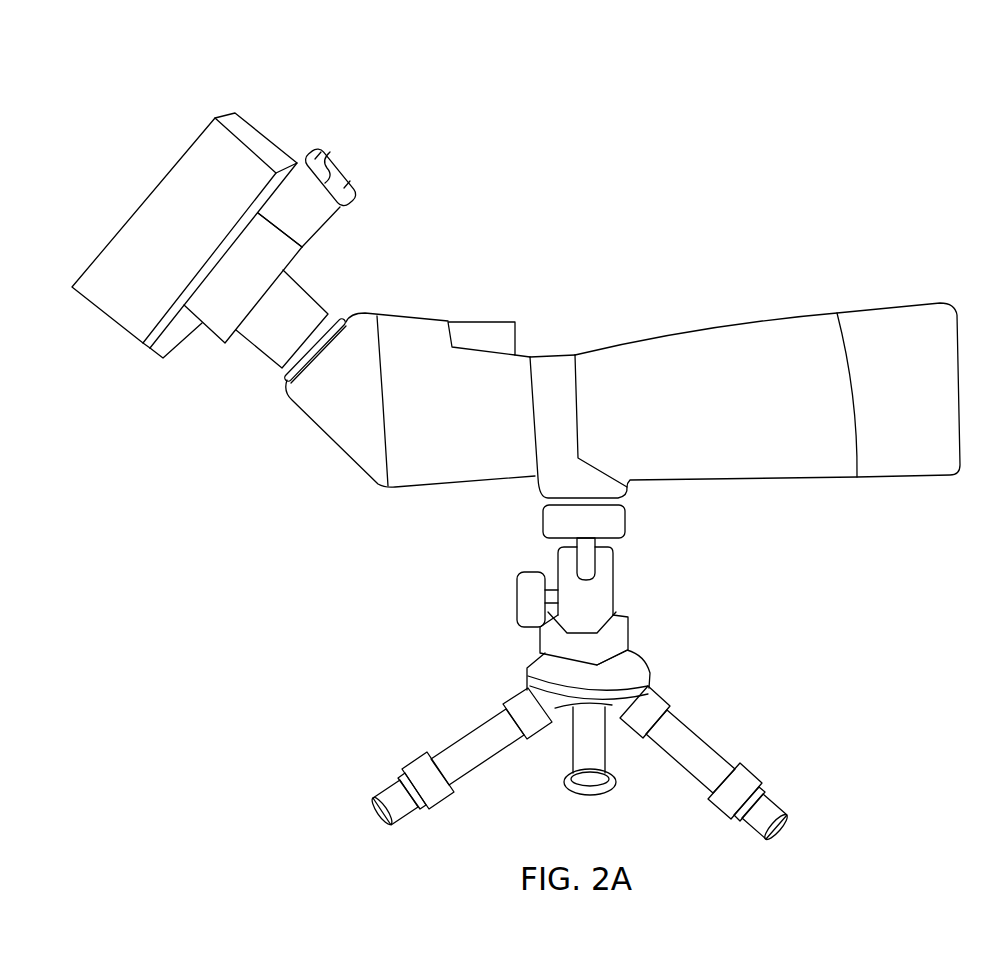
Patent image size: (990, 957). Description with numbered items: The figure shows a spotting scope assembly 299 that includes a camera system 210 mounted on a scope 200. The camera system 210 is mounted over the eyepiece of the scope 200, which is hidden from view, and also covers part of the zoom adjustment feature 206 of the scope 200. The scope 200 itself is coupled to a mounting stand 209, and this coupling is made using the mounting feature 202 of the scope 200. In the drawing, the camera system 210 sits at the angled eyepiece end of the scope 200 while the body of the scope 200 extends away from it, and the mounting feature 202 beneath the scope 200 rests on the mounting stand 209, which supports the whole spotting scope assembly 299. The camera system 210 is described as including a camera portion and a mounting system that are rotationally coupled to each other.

The spotting scope assembly 299 is at (614, 73).
The camera system 210 is at (119, 181).
The zoom adjustment feature 206 is at (313, 299).
The scope 200 is at (768, 267).
The mounting feature 202 is at (532, 488).
The mounting stand 209 is at (440, 650).